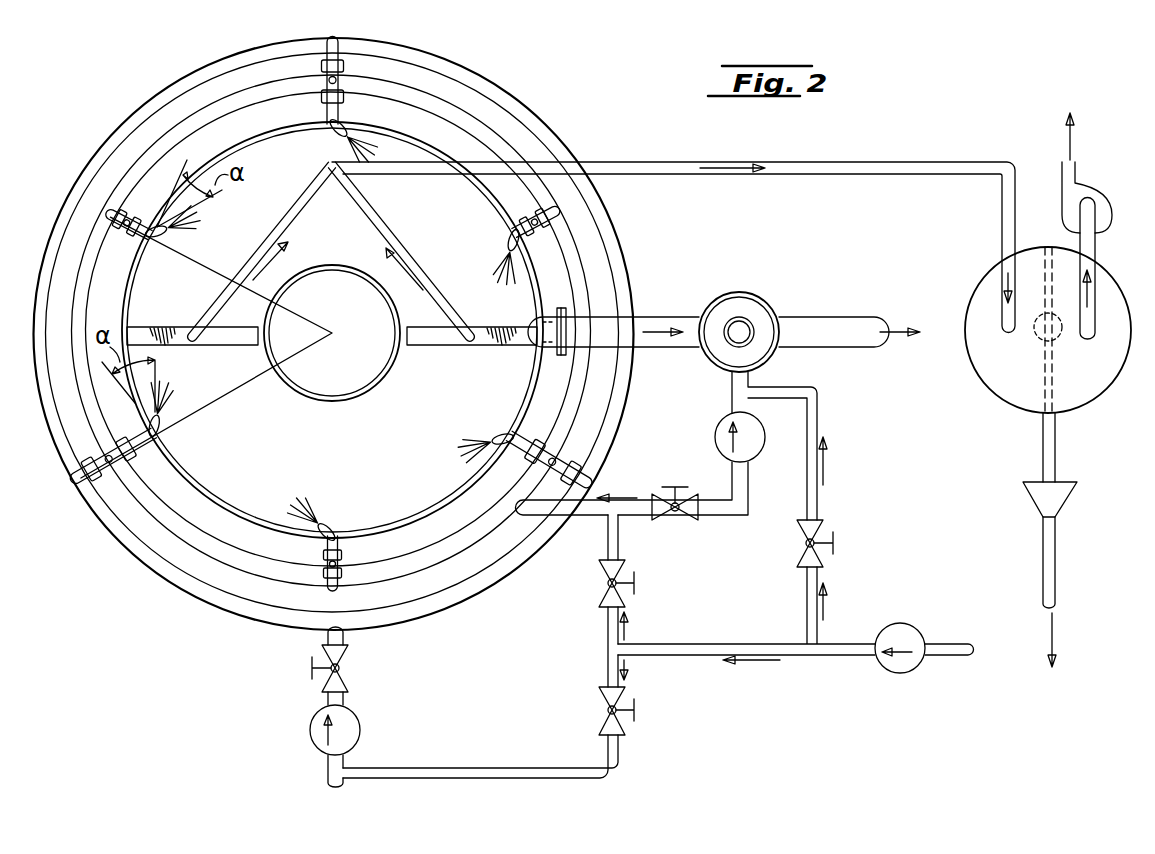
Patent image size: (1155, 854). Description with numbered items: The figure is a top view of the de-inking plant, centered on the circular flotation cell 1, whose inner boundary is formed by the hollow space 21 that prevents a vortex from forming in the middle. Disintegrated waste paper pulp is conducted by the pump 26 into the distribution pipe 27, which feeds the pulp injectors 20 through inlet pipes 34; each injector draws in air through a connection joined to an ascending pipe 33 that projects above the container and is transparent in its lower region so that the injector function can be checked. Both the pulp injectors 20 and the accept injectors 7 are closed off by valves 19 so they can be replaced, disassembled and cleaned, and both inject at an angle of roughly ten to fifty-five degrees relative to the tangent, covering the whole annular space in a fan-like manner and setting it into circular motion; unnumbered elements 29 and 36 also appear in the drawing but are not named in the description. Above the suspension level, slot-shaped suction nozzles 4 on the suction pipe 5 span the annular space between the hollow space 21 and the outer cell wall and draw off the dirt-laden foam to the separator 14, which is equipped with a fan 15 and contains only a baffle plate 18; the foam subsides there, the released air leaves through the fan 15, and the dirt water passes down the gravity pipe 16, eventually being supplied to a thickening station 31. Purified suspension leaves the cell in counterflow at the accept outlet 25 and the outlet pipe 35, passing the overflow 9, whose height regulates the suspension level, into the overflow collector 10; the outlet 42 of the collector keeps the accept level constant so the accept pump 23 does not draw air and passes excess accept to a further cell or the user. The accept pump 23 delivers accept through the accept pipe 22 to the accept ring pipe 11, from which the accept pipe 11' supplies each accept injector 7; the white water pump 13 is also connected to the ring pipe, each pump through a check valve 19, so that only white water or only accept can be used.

The flotation cell 1 is at (254, 133).
The suction nozzles 4 is at (226, 346).
The suction pipe 5 is at (655, 165).
The accept injectors 7 is at (158, 242).
The overflow 9 is at (748, 320).
The overflow collector 10 is at (745, 297).
The accept ring pipe 11 is at (331, 335).
The accept pipe 11' is at (339, 352).
The white water pump 13 is at (903, 672).
The separator 14 is at (997, 378).
The fan 15 is at (1100, 210).
The gravity pipe 16 is at (1058, 340).
The baffle plate 18 is at (1065, 410).
The valves 19 is at (324, 95).
The pulp injectors 20 is at (326, 133).
The hollow space 21 is at (322, 318).
The accept pipe 22 is at (732, 400).
The accept pump 23 is at (757, 447).
The accept outlet 25 is at (541, 348).
The pump for the pulp suspension 26 is at (310, 733).
The distribution pipe 27 is at (240, 612).
The blower 29 is at (1078, 178).
The thickening station 31 is at (1040, 500).
The ascending pipe 33 is at (336, 66).
The inlet pipes 34 is at (340, 124).
The outlet pipe 35 is at (559, 307).
The nozzle holder 36 is at (140, 238).
The outlet 42 is at (860, 325).